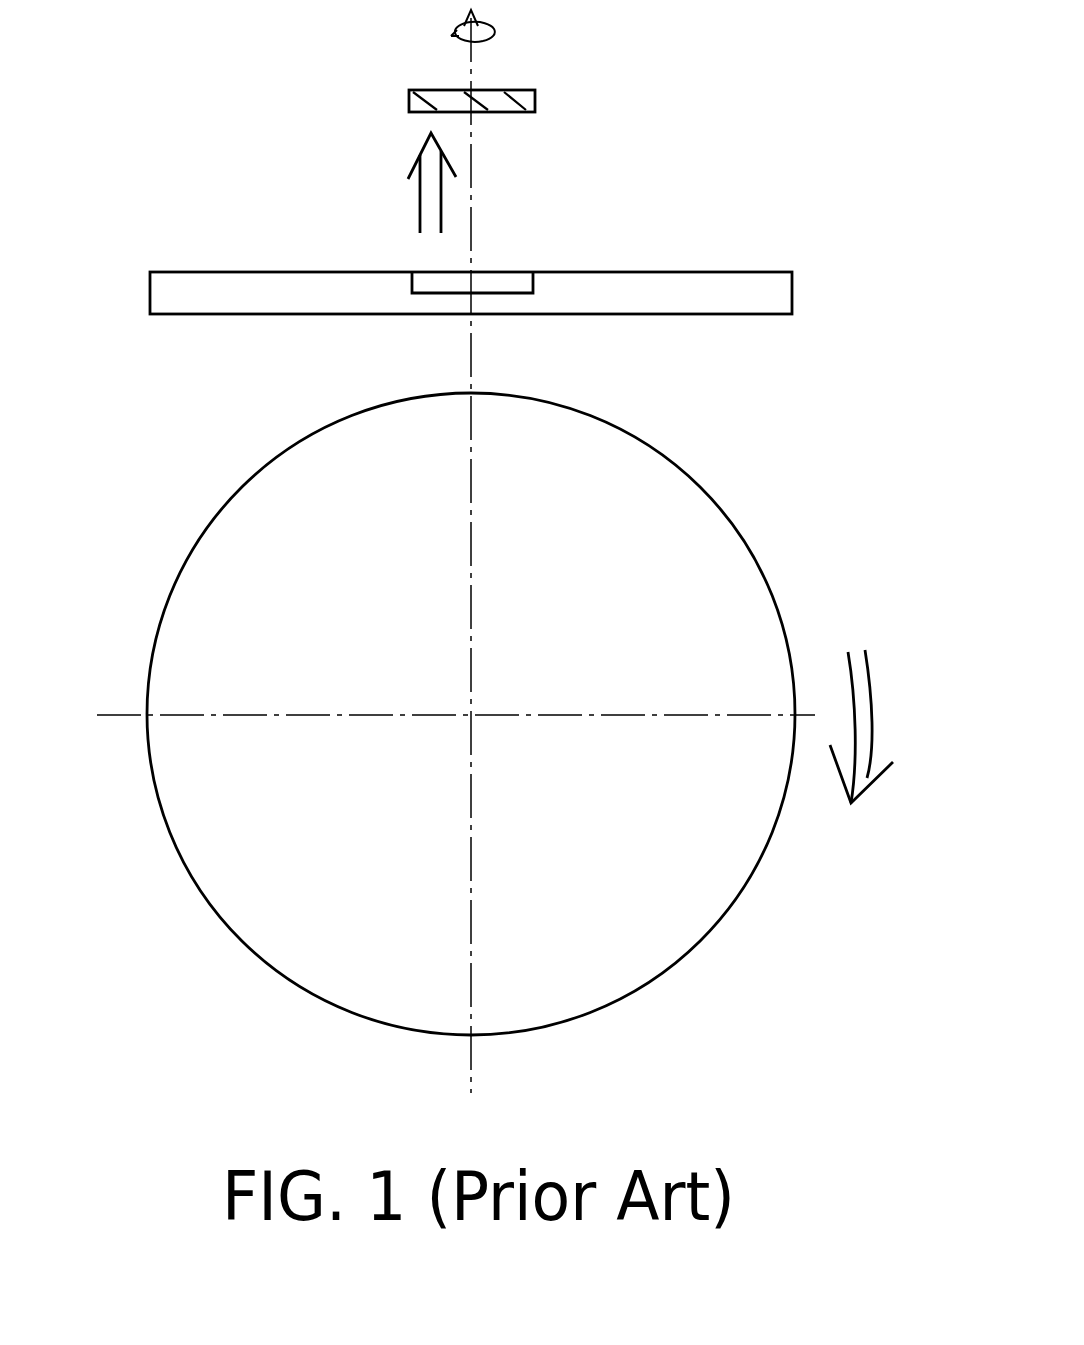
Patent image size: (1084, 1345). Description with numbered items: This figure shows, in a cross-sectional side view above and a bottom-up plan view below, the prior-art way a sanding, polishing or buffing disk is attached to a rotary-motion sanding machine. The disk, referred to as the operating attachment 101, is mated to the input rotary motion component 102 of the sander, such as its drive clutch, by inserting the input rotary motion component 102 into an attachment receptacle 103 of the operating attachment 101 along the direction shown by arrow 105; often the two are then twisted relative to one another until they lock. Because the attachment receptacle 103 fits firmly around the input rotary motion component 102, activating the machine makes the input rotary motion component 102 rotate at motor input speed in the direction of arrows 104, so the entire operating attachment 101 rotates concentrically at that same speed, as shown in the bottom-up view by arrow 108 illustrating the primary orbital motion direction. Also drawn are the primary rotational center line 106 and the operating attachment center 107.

The operating attachment 101 is at (699, 298).
The input rotary motion component 102 is at (507, 93).
The attachment receptacle 103 is at (492, 283).
The arrows indicating rotation direction 104 is at (485, 41).
The arrow indicating insertion 105 is at (430, 197).
The primary rotational center line 106 is at (470, 343).
The operating attachment center 107 is at (468, 712).
The arrow illustrating primary orbital motion direction 108 is at (863, 735).